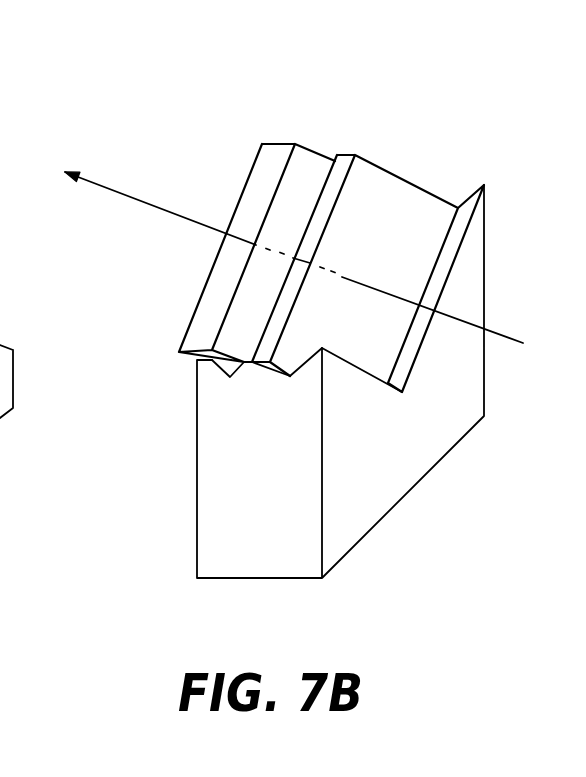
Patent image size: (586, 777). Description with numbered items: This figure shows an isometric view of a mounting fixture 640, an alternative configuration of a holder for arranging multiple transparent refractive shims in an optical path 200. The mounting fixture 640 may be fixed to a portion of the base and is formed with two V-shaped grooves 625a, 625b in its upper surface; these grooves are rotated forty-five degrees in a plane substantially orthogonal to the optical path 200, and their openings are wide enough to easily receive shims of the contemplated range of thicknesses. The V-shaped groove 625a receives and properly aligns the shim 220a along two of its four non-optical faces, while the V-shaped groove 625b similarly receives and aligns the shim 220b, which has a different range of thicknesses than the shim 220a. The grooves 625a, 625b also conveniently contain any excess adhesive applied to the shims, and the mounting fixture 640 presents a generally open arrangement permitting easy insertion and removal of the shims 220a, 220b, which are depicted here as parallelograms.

The optical path 200 is at (123, 192).
The shim 220a is at (373, 160).
The shim 220b is at (284, 143).
The V-shaped groove 625a is at (217, 377).
The V-shaped groove 625b is at (282, 382).
The mounting fixture 640 is at (233, 546).